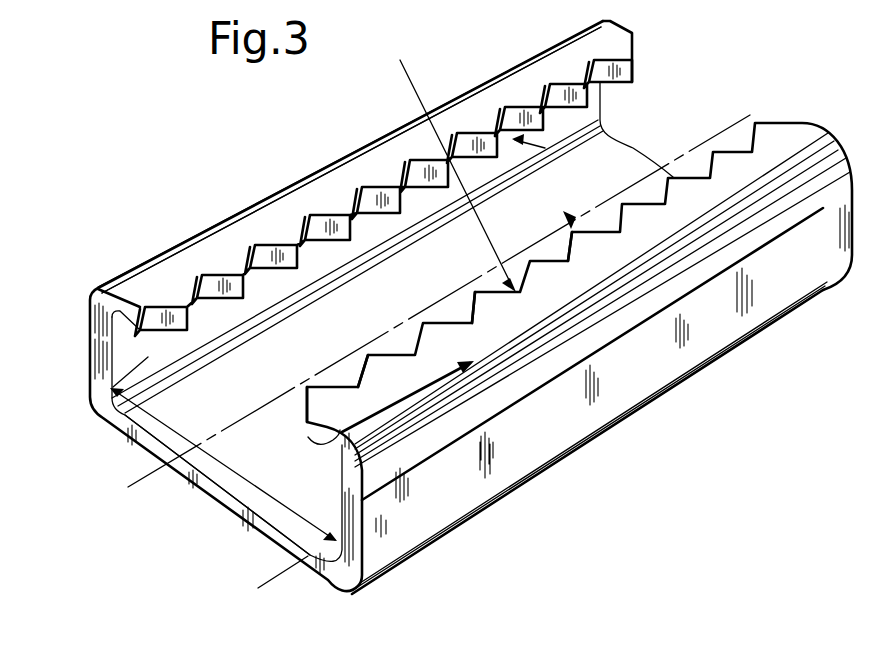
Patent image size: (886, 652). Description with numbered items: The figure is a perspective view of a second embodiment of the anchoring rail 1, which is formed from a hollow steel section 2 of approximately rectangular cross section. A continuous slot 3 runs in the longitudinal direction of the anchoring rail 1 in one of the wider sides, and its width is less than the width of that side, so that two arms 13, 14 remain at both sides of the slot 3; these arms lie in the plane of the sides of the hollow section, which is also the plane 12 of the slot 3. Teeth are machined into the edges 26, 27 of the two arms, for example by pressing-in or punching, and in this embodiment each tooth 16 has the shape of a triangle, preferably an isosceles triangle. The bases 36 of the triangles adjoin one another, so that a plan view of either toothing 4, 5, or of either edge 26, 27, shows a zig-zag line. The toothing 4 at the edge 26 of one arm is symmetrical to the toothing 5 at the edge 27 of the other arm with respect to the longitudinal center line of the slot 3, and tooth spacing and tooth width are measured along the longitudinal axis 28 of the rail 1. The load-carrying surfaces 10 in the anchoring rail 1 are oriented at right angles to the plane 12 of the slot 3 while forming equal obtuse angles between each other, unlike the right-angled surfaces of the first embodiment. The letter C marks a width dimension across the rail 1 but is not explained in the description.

The anchoring rail 1 is at (399, 100).
The hollow steel section 2 is at (633, 147).
The slot 3 is at (658, 75).
The toothing 4 is at (545, 148).
The toothing 5 is at (429, 229).
The load-carrying surface 10 is at (190, 303).
The plane of the slot 12 is at (283, 383).
The arm 13 is at (638, 222).
The arm 14 is at (452, 120).
The tooth 16 is at (690, 378).
The edge 26 is at (493, 130).
The edge 27 is at (578, 242).
The longitudinal axis 28 is at (150, 473).
The base 36 is at (503, 303).
The channel width C is at (223, 472).